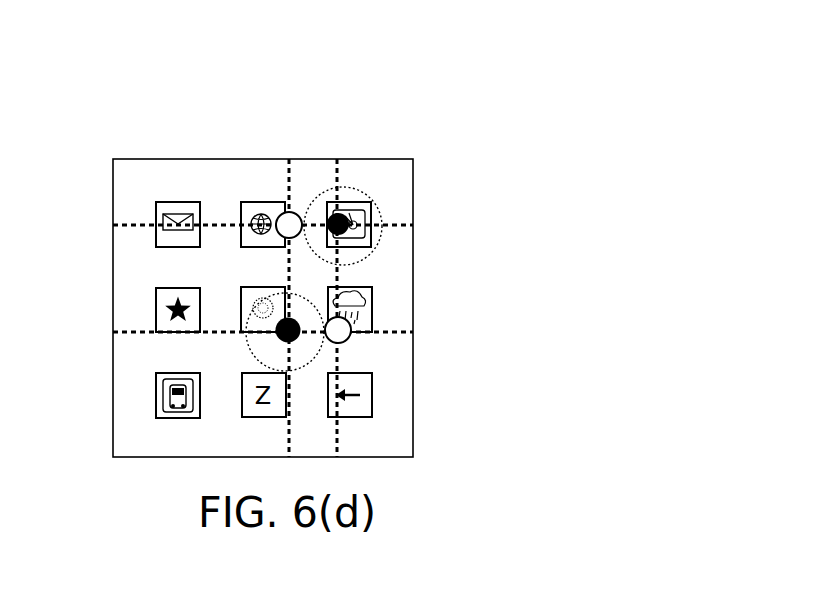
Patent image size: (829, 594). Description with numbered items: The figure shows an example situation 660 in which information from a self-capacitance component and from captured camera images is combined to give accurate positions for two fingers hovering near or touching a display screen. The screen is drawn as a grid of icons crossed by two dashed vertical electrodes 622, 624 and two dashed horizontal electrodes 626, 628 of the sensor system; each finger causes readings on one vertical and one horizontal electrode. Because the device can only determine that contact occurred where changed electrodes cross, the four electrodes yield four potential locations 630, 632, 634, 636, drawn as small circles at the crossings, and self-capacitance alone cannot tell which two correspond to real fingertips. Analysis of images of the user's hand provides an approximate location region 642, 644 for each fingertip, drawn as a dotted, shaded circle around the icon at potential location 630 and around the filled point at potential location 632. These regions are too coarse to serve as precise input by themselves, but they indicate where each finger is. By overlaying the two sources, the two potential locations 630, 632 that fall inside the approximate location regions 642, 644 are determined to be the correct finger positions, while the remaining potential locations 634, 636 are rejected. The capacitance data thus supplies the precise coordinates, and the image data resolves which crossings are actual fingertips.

The vertical electrode 622 is at (288, 158).
The vertical electrode 624 is at (337, 158).
The horizontal electrode 626 is at (112, 225).
The horizontal electrode 628 is at (112, 333).
The potential location 630 is at (365, 247).
The potential location 632 is at (276, 334).
The potential location 634 is at (332, 323).
The potential location 636 is at (289, 224).
The approximate location region 642 is at (380, 210).
The approximate location region 644 is at (300, 371).
The example situation 660 is at (504, 125).